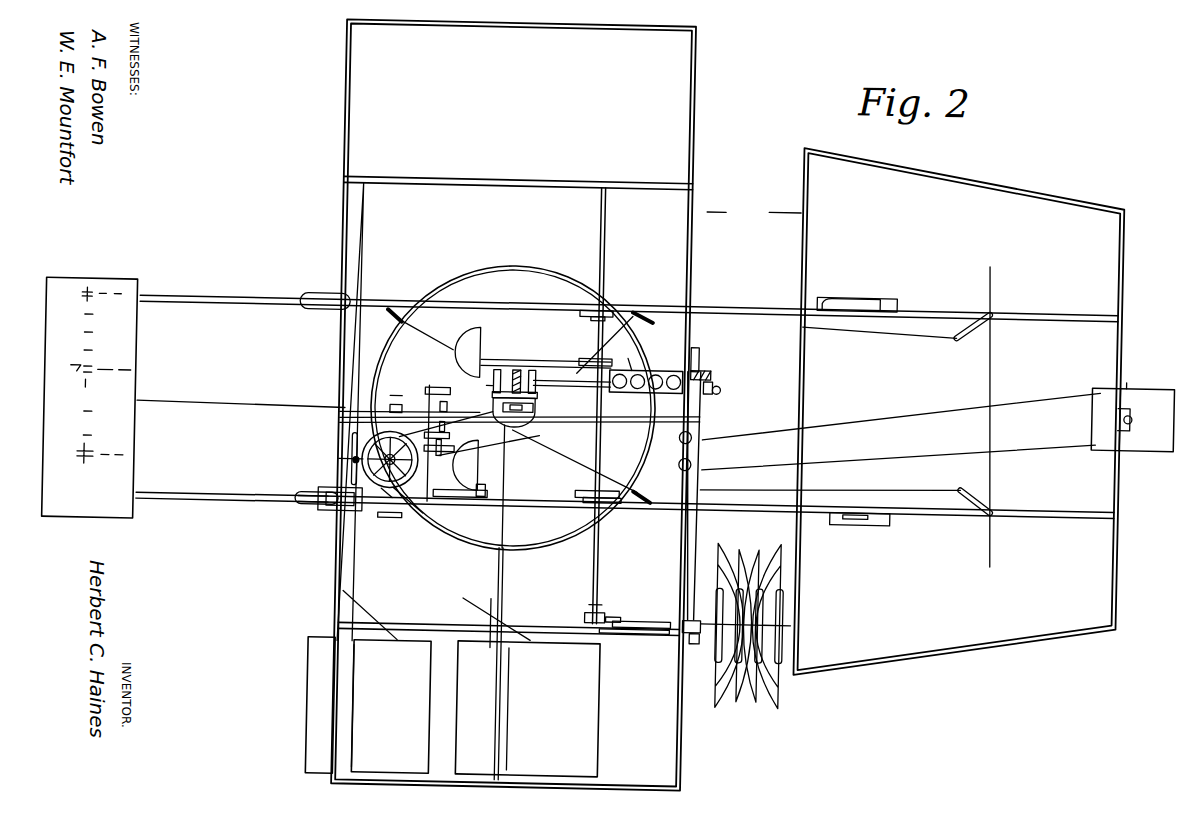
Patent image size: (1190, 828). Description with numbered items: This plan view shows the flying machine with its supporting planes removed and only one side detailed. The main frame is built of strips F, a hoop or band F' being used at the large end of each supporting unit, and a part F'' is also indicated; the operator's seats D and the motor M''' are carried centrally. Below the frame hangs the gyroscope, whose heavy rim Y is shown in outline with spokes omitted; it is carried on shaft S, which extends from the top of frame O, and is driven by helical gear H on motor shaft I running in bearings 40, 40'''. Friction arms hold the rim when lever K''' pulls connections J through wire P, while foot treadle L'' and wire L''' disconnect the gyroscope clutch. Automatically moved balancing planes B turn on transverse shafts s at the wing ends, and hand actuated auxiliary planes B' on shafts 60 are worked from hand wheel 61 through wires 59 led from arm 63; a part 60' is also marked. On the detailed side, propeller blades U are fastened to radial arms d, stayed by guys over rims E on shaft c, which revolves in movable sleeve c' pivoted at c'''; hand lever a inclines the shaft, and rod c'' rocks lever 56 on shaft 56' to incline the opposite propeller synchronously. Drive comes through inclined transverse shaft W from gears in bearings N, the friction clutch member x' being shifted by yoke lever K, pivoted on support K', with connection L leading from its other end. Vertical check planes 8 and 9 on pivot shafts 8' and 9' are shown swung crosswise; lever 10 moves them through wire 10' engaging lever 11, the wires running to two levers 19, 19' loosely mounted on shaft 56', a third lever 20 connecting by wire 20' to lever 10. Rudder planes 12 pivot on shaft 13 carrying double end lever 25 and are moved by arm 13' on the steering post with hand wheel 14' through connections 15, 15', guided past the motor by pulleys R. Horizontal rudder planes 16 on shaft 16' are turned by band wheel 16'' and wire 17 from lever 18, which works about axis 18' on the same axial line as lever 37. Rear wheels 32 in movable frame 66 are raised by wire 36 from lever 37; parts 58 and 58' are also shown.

The frame strips F is at (644, 407).
The hoop or band F' is at (551, 332).
The frame connection F'' is at (754, 218).
The connecting wire P is at (493, 601).
The gyroscope rim Y is at (520, 265).
The balancing planes B is at (527, 709).
The auxiliary planes B' is at (368, 706).
The horizontal shafts 60 is at (365, 706).
The transverse horizontal shafts s is at (507, 738).
The connecting wires 59 is at (342, 560).
The brace 60' is at (370, 572).
The horizontal double rudder planes 16 is at (90, 397).
The horizontal transverse shaft 16' is at (63, 441).
The band wheel 16'' is at (62, 382).
The band or wire 17 is at (234, 409).
The connection 15 is at (626, 468).
The connection 15' is at (627, 368).
The support K' is at (520, 409).
The vertical check plane 9 is at (959, 415).
The vertical pivot shaft 9' is at (976, 304).
The lever 11 is at (961, 333).
The connecting wire 10' is at (830, 480).
The vertical check plane 8 is at (998, 483).
The vertical pivot shaft 8' is at (971, 523).
The vertical rudder planes 12 is at (1154, 428).
The vertical shaft 13 is at (1114, 420).
The double end lever 25 is at (1128, 380).
The movable fork or frame 66 is at (870, 291).
The rear supporting wheels 32 is at (302, 512).
The hand wheel 14' is at (381, 469).
The arm 13' is at (337, 454).
The arm 63 is at (354, 465).
The hand wheel 61 is at (411, 494).
The foot treadle L'' is at (446, 443).
The connecting wire L''' is at (458, 414).
The lever K''' is at (469, 441).
The lever 18 is at (396, 391).
The axis 18' is at (389, 408).
The propeller blades U is at (402, 418).
The operator's seats D is at (466, 408).
The connections J is at (518, 406).
The lever 10 is at (404, 342).
The motor shaft I is at (603, 359).
The helical gear H is at (514, 368).
The bearing 40 is at (491, 381).
The bearing 40''' is at (571, 376).
The lever 20 is at (546, 354).
The wire 20' is at (548, 350).
The lever 19 is at (586, 404).
The lever 19' is at (590, 346).
The frame O is at (547, 395).
The gyroscope shaft S is at (555, 408).
The connection L is at (646, 392).
The motor M''' is at (629, 357).
The transverse shaft W is at (700, 523).
The bearings N is at (698, 353).
The friction clutch member x' is at (710, 372).
The yoke lever K is at (717, 390).
The pulleys R is at (680, 461).
The bracket 58 is at (568, 494).
The bracket 58' is at (556, 495).
The wire 36 is at (466, 512).
The hand lever a is at (463, 491).
The lever 37 is at (390, 522).
The rock lever 56 is at (582, 615).
The shaft 56' is at (586, 418).
The rod c'' is at (613, 609).
The movable sleeve c' is at (641, 612).
The pivot c''' is at (634, 636).
The propeller shaft c is at (736, 622).
The circular rims E is at (755, 626).
The radial arms d is at (783, 572).